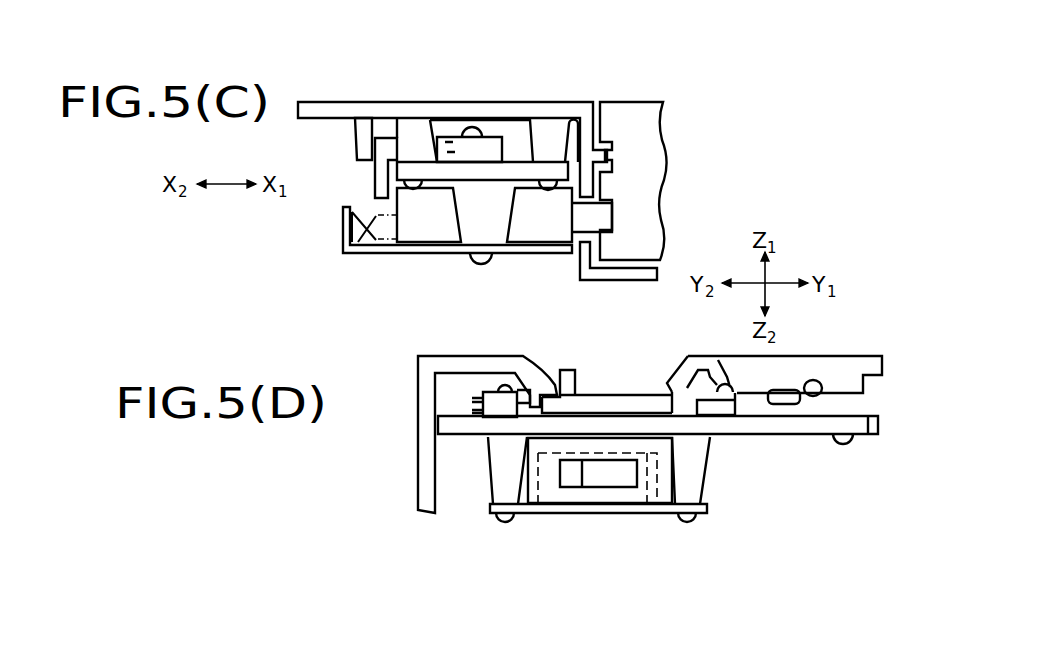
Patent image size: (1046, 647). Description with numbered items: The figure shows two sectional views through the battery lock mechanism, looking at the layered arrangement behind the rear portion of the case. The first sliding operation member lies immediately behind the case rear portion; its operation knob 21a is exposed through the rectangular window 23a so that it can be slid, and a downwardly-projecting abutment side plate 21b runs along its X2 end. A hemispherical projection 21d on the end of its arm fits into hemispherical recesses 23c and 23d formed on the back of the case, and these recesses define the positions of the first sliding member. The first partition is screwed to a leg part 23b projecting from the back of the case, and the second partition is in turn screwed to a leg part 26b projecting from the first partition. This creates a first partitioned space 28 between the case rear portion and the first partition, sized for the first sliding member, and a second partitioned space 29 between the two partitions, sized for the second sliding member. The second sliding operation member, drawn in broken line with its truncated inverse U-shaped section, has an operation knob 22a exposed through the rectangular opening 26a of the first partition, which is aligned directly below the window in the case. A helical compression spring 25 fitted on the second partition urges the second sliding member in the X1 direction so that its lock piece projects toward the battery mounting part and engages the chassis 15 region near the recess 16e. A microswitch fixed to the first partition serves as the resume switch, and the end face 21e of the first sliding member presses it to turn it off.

The chassis 15 is at (637, 112).
The engaging recess of chassis 16e is at (613, 152).
The operation knob 21a is at (565, 370).
The abutment side plate 21b is at (375, 183).
The hemispherical projection 21d is at (735, 415).
The end face 21e is at (512, 372).
The operation knob 22a is at (595, 413).
The rectangular window 23a is at (637, 383).
The leg part 23b is at (850, 400).
The hemispherical recess 23c is at (712, 375).
The hemispherical recess 23d is at (830, 383).
The helical compression spring 25 is at (375, 217).
The rectangular opening 26a is at (488, 437).
The leg part 26b is at (707, 483).
The first partitioned space 28 is at (767, 393).
The second partitioned space 29 is at (650, 440).